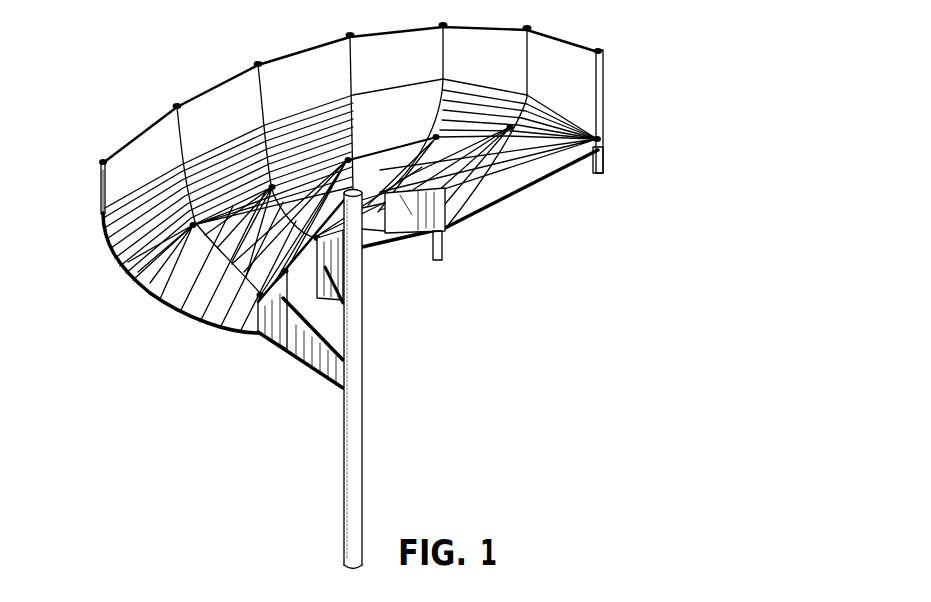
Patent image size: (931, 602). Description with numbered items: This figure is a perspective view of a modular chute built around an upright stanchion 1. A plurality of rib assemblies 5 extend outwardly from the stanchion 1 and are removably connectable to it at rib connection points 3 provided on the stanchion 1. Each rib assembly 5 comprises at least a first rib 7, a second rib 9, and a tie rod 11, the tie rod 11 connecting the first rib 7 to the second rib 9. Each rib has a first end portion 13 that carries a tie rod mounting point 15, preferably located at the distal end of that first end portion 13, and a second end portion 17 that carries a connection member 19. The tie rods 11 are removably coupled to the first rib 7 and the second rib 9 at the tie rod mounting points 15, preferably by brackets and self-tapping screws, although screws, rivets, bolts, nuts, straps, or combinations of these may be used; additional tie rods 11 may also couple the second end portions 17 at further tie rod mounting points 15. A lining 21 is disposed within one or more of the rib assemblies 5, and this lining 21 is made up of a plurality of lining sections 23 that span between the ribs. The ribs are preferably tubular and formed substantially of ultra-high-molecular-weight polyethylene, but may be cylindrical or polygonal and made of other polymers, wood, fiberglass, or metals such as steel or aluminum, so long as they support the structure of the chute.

The stanchion 1 is at (362, 458).
The rib connection points 3 is at (342, 388).
The rib assemblies 5 is at (268, 347).
The first rib 7 is at (101, 160).
The second rib 9 is at (176, 104).
The tie rod 11 is at (141, 135).
The first end portion 13 is at (103, 241).
The tie rod mounting points 15 is at (99, 168).
The second end portion 17 is at (152, 294).
The connection member 19 is at (300, 353).
The lining 21 is at (122, 182).
The lining sections 23 is at (137, 258).